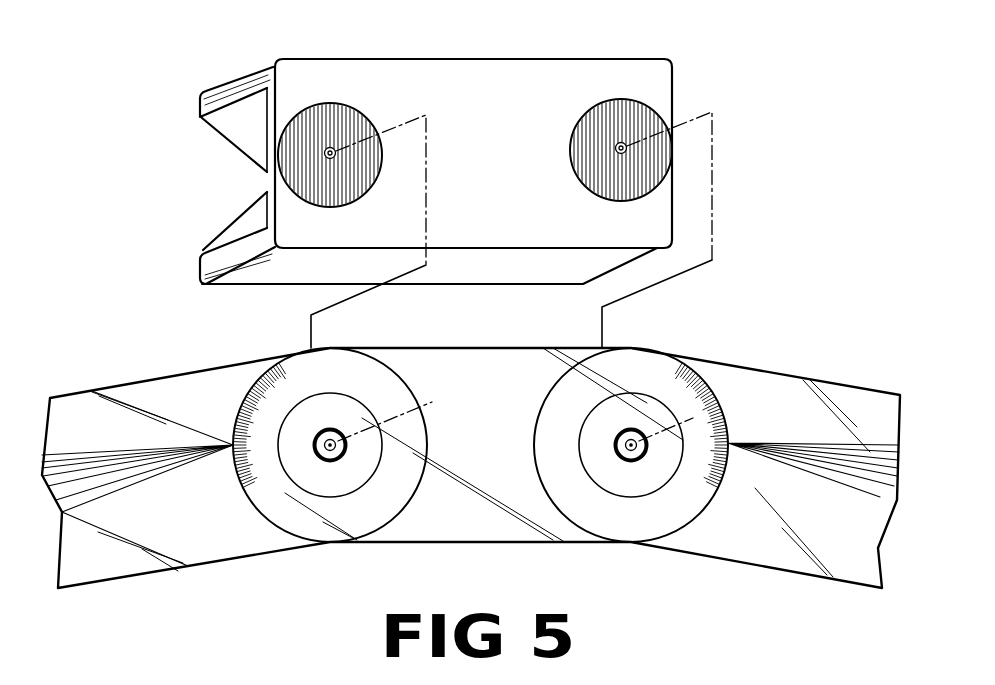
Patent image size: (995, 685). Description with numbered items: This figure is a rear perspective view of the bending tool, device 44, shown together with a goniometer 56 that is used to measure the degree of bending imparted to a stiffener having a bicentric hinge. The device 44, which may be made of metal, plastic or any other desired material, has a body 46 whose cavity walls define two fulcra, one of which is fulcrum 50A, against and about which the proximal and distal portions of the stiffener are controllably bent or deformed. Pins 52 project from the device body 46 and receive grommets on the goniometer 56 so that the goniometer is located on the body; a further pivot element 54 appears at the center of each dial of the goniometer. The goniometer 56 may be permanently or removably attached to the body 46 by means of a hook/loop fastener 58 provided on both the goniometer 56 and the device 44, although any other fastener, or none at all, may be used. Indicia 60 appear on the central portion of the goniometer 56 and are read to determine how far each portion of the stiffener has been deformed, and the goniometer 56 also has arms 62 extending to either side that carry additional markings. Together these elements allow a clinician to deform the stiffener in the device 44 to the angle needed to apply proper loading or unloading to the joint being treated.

The device 44 is at (660, 72).
The body 46 is at (628, 254).
The fulcrum 50A is at (264, 178).
The pins 52 is at (340, 148).
The pivot pin 54 is at (331, 428).
The goniometer 56 is at (815, 370).
The hook/loop fastener 58 is at (338, 120).
The indicia 60 is at (284, 372).
The arms 62 is at (133, 393).